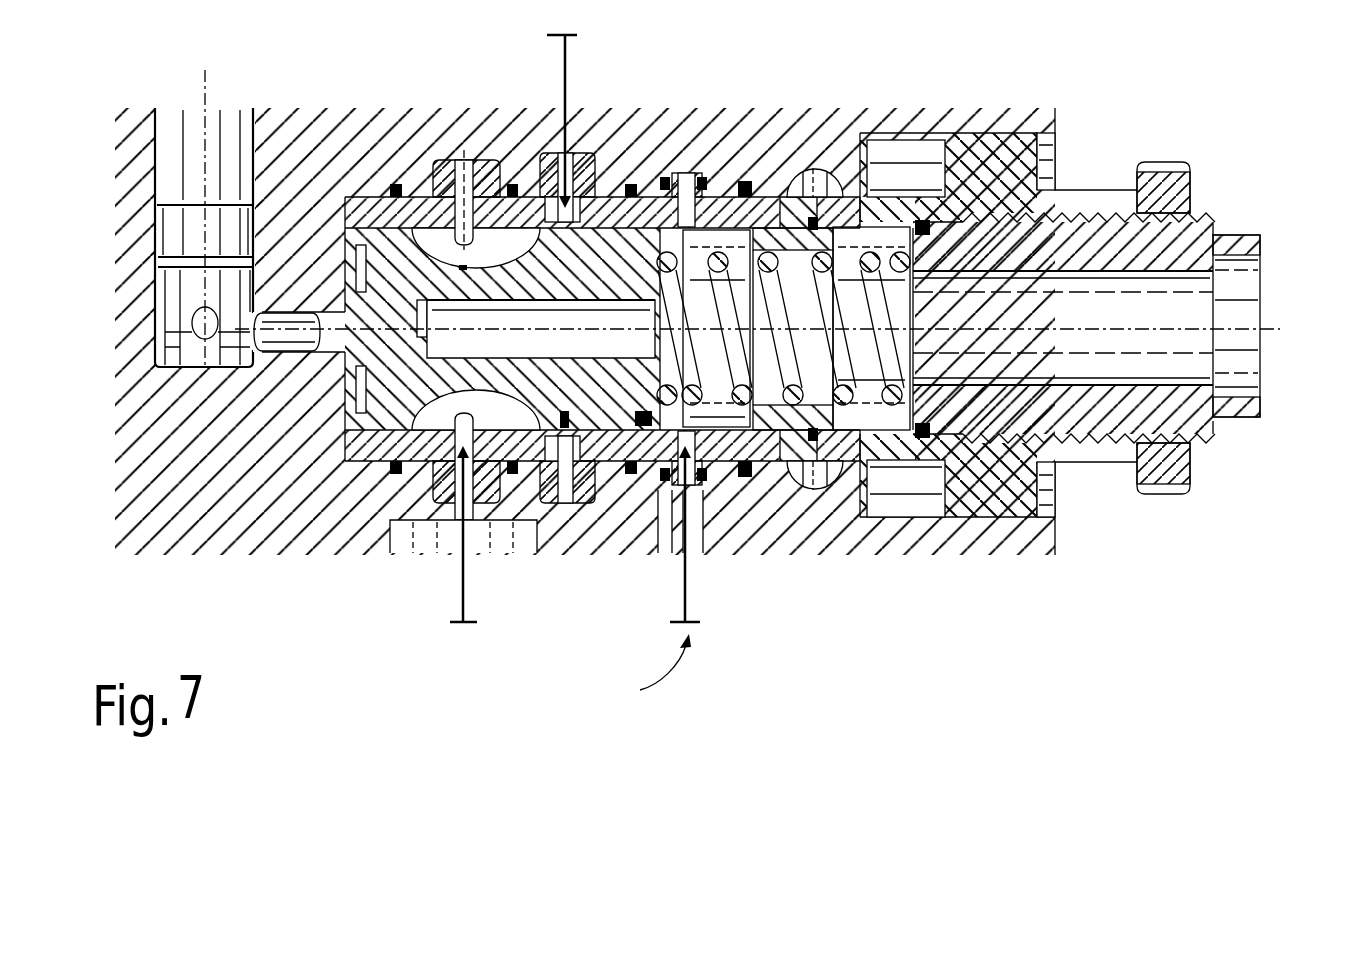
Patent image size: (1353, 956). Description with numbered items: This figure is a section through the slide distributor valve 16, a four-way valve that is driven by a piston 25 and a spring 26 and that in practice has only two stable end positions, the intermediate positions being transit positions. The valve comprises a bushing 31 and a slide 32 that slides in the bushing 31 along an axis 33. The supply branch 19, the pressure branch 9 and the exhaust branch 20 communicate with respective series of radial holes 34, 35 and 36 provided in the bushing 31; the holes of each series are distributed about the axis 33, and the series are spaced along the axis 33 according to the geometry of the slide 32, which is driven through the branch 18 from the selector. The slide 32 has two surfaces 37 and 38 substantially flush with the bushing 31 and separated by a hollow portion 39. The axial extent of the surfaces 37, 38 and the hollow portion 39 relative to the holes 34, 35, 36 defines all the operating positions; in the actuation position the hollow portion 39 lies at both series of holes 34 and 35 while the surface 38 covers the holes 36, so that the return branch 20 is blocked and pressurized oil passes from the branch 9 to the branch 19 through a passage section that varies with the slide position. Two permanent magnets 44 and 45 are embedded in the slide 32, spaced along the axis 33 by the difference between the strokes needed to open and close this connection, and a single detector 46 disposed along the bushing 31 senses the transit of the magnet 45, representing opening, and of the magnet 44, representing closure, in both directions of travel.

The branch 9 is at (570, 62).
The slide distributor valve 16 is at (640, 670).
The branch 18 is at (165, 328).
The supply branch 19 is at (460, 572).
The exhaust branch 20 is at (692, 580).
The piston 25 is at (282, 352).
The spring 26 is at (905, 312).
The bushing 31 is at (784, 194).
The slide 32 is at (408, 378).
The axis 33 is at (1265, 310).
The radial holes 34 is at (458, 158).
The radial holes 35 is at (590, 175).
The radial holes 36 is at (700, 180).
The surface 37 is at (665, 175).
The surface 38 is at (386, 215).
The hollow portion 39 is at (503, 250).
The permanent magnet 44 is at (556, 425).
The permanent magnet 45 is at (662, 470).
The detector 46 is at (690, 475).